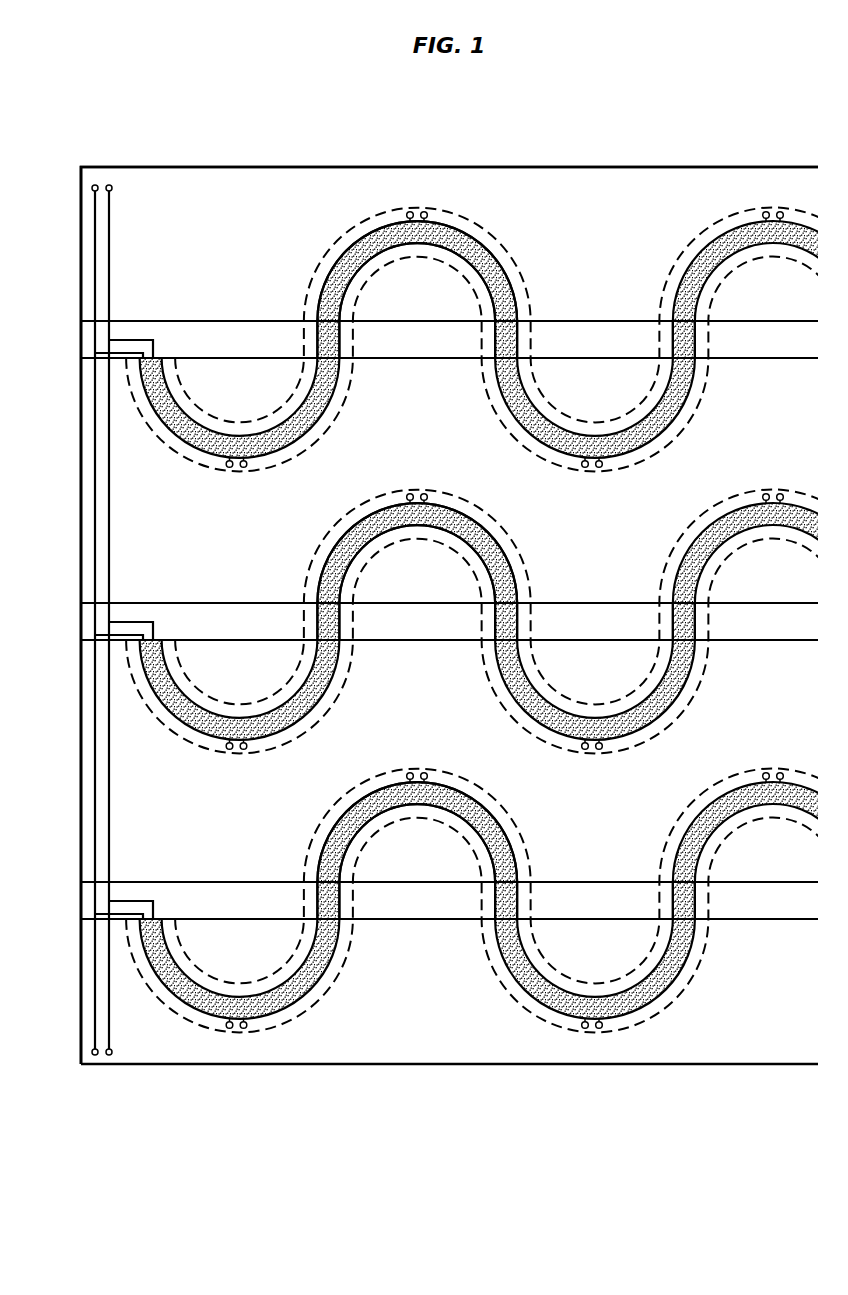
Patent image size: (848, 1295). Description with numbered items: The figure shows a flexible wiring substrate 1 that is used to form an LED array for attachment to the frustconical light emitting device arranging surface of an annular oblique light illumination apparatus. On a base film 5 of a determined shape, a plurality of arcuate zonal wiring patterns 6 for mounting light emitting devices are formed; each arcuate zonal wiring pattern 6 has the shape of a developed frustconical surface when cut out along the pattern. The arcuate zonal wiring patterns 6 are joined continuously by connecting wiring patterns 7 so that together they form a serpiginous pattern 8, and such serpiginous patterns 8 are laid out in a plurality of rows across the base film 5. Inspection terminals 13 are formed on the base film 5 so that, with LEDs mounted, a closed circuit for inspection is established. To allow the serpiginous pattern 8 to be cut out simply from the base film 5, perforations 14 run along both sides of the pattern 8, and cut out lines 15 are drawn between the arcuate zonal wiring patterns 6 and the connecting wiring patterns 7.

The flexible wiring substrate 1 is at (449, 583).
The base film 5 is at (595, 195).
The arcuate zonal wiring pattern 6 is at (478, 260).
The connecting wiring pattern 7 is at (325, 333).
The serpiginous pattern 8 is at (333, 273).
The inspection terminals 13 is at (107, 191).
The perforations 14 is at (303, 305).
The cut out lines 15 is at (210, 357).